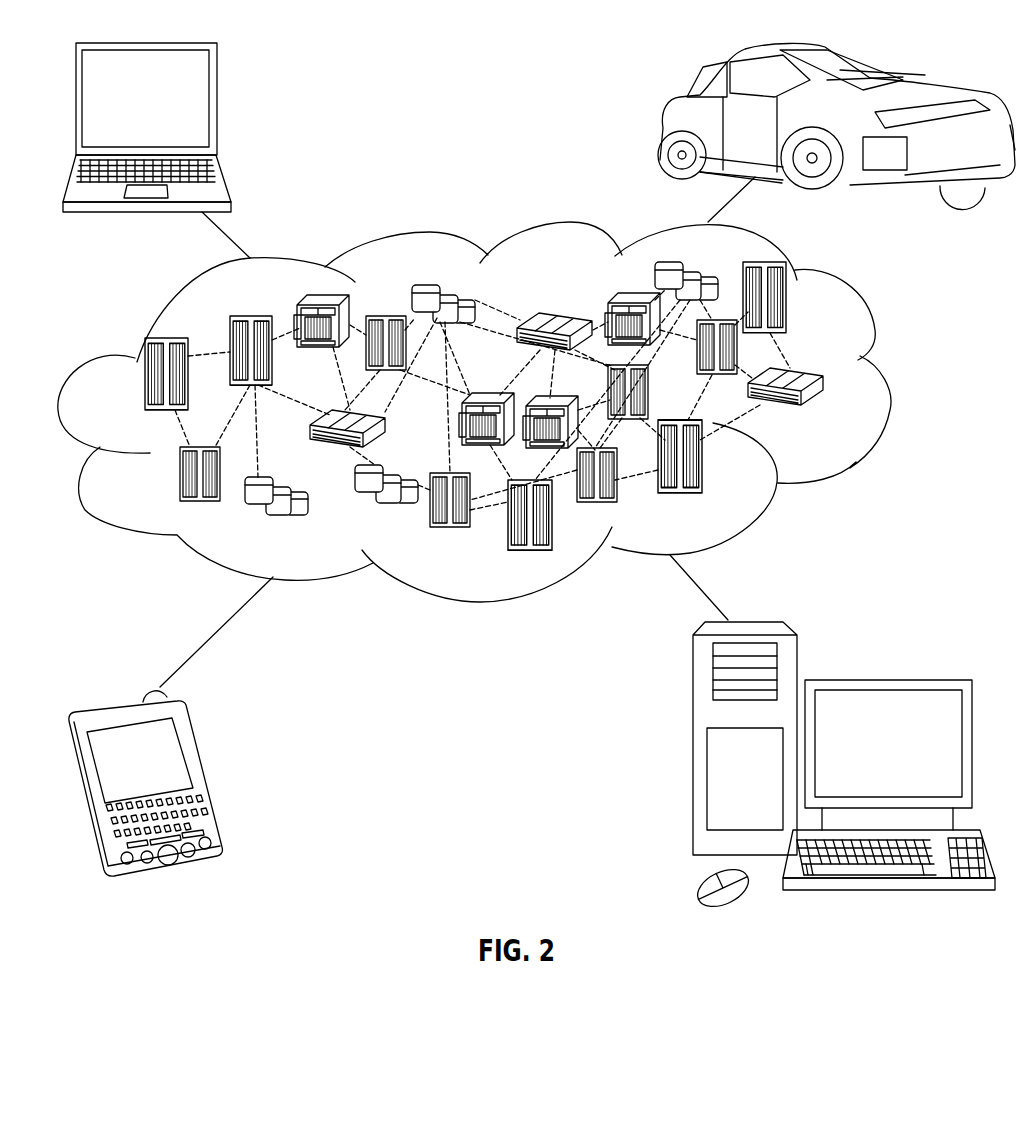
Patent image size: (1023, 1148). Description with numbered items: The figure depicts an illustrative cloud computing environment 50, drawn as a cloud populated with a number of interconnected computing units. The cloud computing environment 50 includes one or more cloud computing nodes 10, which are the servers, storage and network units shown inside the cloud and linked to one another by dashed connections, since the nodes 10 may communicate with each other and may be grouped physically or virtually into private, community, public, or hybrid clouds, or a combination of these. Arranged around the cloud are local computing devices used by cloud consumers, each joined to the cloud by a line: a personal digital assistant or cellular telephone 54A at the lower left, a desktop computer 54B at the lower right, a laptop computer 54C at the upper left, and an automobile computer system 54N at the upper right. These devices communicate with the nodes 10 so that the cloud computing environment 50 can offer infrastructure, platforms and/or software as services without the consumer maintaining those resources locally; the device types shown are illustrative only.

The personal digital assistant or cellular telephone 54A is at (207, 772).
The desktop computer 54B is at (885, 680).
The laptop computer 54C is at (217, 106).
The automobile computer system 54N is at (658, 121).
The cloud computing environment 50 is at (504, 412).
The cloud computing node 10 is at (826, 417).